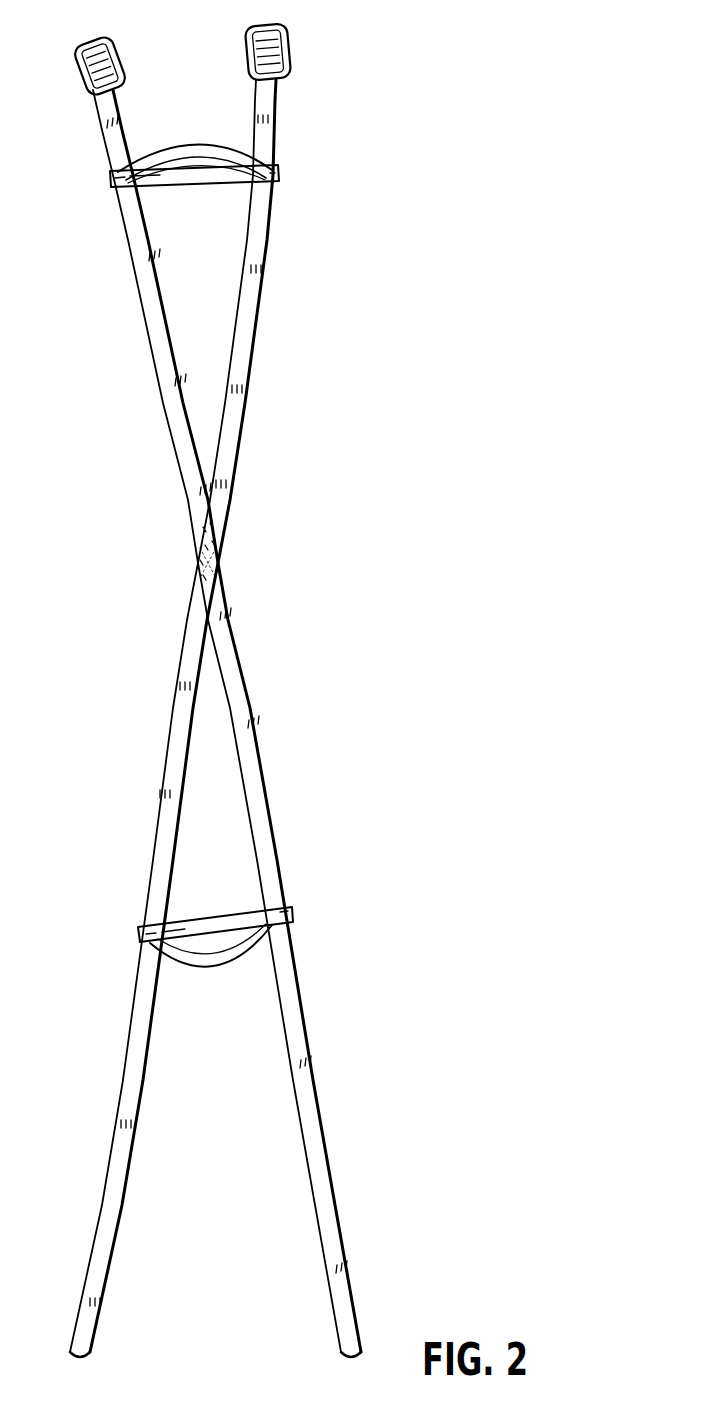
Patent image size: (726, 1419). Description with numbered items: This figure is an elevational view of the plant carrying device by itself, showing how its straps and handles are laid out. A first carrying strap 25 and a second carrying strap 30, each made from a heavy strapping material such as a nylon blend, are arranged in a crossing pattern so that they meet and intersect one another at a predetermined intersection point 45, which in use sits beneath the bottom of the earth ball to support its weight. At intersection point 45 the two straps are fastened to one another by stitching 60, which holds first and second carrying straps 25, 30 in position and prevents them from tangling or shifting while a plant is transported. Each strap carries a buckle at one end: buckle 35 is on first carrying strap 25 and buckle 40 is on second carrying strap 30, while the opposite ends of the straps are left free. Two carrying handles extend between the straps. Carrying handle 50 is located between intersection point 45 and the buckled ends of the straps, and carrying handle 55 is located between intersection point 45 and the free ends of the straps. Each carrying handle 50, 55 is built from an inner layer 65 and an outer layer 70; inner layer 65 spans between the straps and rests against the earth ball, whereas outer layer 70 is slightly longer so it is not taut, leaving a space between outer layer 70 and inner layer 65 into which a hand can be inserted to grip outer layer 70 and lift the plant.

The first carrying strap 25 is at (128, 260).
The second carrying strap 30 is at (265, 262).
The buckle 35 is at (104, 45).
The buckle 40 is at (282, 35).
The intersection point 45 is at (216, 560).
The carrying handle 50 is at (276, 175).
The carrying handle 55 is at (292, 914).
The stitching 60 is at (212, 532).
The inner layer 65 is at (200, 180).
The outer layer 70 is at (196, 143).